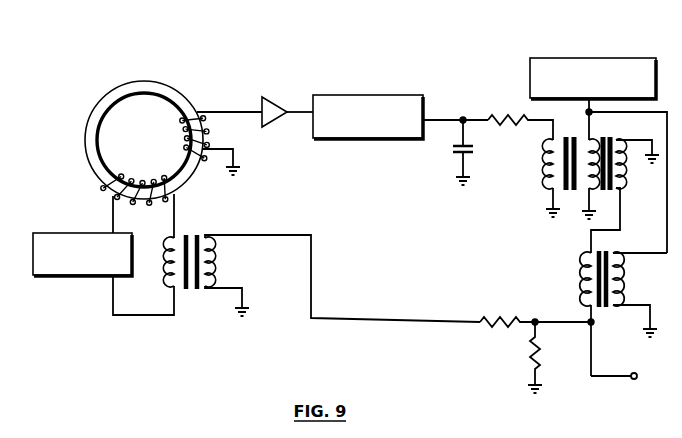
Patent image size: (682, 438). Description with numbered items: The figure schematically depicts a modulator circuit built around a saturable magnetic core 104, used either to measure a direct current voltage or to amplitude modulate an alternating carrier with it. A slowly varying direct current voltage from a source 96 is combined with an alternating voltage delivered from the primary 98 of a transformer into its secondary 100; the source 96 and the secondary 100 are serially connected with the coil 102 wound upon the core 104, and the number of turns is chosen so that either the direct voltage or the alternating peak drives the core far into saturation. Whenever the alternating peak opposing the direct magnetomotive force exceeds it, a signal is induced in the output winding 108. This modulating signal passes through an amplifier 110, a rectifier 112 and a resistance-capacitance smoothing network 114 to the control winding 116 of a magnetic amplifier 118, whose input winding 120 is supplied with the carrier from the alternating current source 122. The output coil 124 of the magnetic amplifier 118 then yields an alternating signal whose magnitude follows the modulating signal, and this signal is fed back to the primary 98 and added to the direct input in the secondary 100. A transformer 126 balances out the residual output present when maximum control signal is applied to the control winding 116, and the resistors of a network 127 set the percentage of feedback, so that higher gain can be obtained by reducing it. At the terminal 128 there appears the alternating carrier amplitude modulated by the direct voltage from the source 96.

The source 96 is at (88, 276).
The primary 98 is at (216, 256).
The secondary 100 is at (164, 262).
The coil 102 is at (139, 187).
The saturable magnetic core 104 is at (186, 176).
The output winding 108 is at (187, 116).
The amplifier 110 is at (266, 123).
The rectifier 112 is at (365, 139).
The resistance-capacitance smoothing network 114 is at (476, 112).
The control winding 116 is at (545, 170).
The magnetic amplifier 118 is at (576, 212).
The input winding 120 is at (592, 144).
The alternating current source 122 is at (636, 62).
The output coil 124 is at (626, 184).
The transformer 126 is at (634, 270).
The network 127 is at (527, 333).
The terminal 128 is at (637, 376).